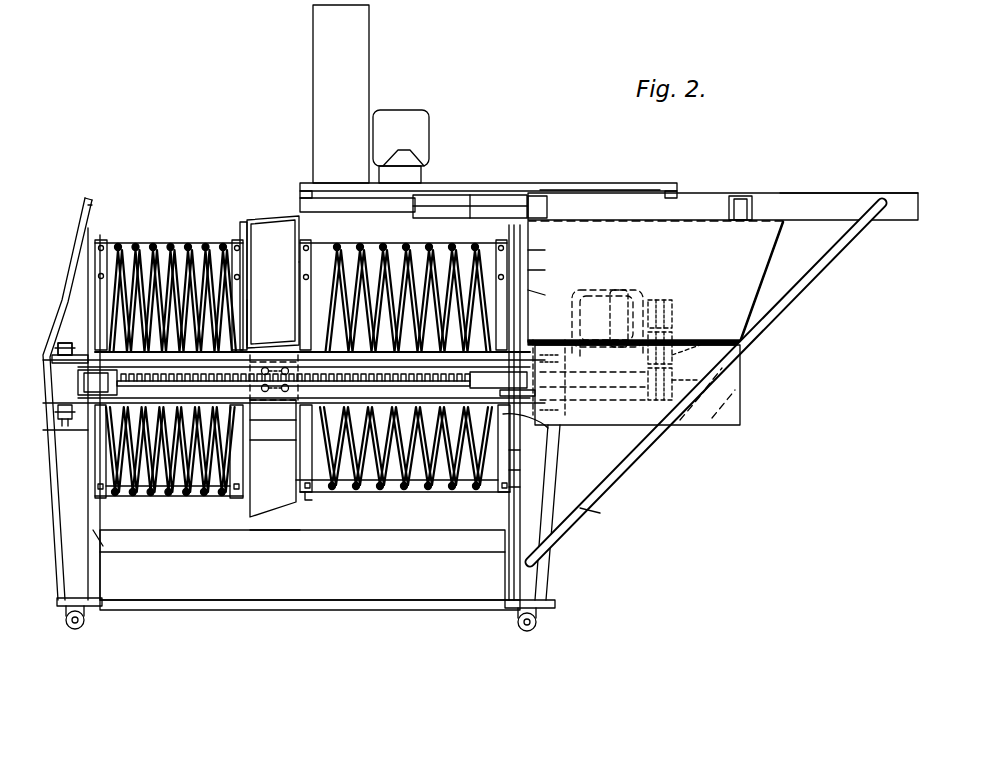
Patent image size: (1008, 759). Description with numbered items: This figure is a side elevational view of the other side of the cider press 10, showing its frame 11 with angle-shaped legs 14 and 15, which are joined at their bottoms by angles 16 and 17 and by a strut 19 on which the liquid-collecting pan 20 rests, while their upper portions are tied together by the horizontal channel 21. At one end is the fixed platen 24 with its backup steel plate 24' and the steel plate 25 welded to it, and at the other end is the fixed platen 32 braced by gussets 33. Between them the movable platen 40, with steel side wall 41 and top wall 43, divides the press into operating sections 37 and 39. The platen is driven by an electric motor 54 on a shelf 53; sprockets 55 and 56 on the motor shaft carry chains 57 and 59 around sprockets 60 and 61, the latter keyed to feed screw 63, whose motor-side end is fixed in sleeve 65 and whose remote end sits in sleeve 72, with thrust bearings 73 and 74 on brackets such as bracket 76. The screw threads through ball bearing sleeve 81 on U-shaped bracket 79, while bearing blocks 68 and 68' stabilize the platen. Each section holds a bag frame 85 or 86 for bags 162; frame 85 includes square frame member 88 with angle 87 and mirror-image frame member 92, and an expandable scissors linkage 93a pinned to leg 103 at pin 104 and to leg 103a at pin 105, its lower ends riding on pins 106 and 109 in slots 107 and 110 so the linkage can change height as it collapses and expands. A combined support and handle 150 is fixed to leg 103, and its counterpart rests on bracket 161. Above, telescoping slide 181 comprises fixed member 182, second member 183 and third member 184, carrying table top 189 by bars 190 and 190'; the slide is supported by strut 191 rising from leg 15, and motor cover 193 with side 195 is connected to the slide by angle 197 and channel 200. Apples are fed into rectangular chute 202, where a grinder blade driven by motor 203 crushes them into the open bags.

The cider press 10 is at (192, 108).
The frame 11 is at (555, 508).
The leg 14 is at (86, 578).
The leg 15 is at (543, 582).
The angle 16 is at (100, 610).
The angle 17 is at (522, 612).
The strut 19 is at (204, 612).
The pan 20 is at (392, 586).
The horizontal channel 21 is at (555, 410).
The fixed platen 24 is at (99, 181).
The backup steel plate 24' is at (62, 210).
The steel plate 25 is at (66, 300).
The fixed platen 32 is at (497, 198).
The gussets 33 is at (548, 263).
The operating section 37 is at (448, 200).
The operating section 39 is at (168, 244).
The movable platen 40 is at (270, 532).
The side wall 41 is at (280, 255).
The top wall 43 is at (244, 221).
The shelf 53 is at (607, 323).
The electric motor 54 is at (614, 292).
The sprocket 55 is at (670, 302).
The sprocket 56 is at (672, 310).
The chain 57 is at (672, 366).
The chain 59 is at (680, 336).
The sprocket 60 is at (650, 400).
The sprocket 61 is at (670, 384).
The feed screw 63 is at (148, 384).
The sleeve 65 is at (548, 428).
The bearing block 68 is at (273, 353).
The bearing block 68' is at (271, 458).
The sleeve 72 is at (96, 392).
The thrust bearing 73 is at (293, 380).
The thrust bearing 74 is at (80, 350).
The bracket 76 is at (90, 300).
The U-shaped bracket 79 is at (252, 441).
The ball bearing sleeve 81 is at (252, 422).
The frame 85 is at (372, 490).
The frame 86 is at (150, 244).
The angle 87 is at (534, 252).
The square frame member 88 is at (532, 288).
The frame member 92 is at (308, 262).
The scissors linkage 93a is at (405, 230).
The leg 103 is at (520, 452).
The leg 103a is at (306, 480).
The pin 104 is at (492, 247).
The pin 105 is at (314, 246).
The pin 106 is at (520, 472).
The slot 107 is at (520, 488).
The pin 109 is at (316, 494).
The slot 110 is at (310, 500).
The combined support and handle 150 is at (522, 300).
The bracket 161 is at (249, 338).
The bags 162 is at (210, 246).
The telescoping slide member 181 is at (455, 186).
The fixed member 182 is at (798, 196).
The second member 183 is at (526, 194).
The third member 184 is at (347, 200).
The table top 189 is at (638, 184).
The elongated bar 190 is at (285, 170).
The bar 190' is at (695, 171).
The strut 191 is at (812, 288).
The motor cover 193 is at (612, 196).
The side 195 is at (772, 250).
The angle 197 is at (548, 209).
The channel 200 is at (740, 197).
The rectangular chute 202 is at (366, 48).
The motor 203 is at (398, 112).